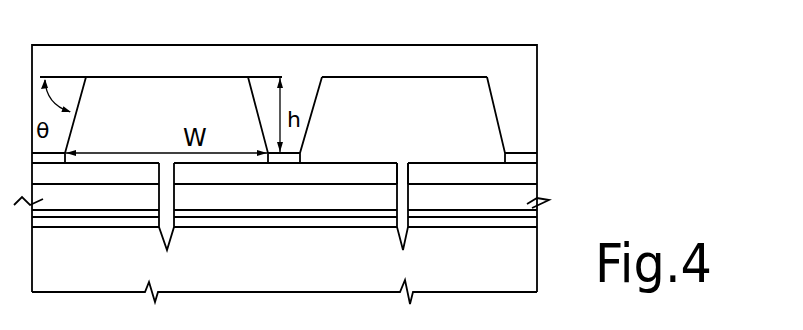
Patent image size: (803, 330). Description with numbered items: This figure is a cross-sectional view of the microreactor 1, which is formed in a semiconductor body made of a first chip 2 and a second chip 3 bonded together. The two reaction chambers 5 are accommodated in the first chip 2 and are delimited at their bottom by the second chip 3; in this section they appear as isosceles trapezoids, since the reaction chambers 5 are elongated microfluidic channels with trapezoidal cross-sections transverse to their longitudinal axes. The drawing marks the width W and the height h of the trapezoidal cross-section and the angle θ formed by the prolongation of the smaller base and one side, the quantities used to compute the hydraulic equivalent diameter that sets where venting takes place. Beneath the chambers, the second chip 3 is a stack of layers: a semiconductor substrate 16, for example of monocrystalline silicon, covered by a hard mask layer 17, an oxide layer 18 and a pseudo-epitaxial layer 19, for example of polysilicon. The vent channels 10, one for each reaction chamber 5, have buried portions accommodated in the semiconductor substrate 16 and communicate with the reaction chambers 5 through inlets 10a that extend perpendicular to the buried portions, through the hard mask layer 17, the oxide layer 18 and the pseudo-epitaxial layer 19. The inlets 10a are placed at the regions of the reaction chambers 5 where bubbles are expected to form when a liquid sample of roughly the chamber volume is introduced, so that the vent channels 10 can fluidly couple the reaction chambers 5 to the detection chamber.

The microreactor 1 is at (616, 121).
The first chip 2 is at (532, 92).
The second chip 3 is at (108, 300).
The reaction chamber 5 is at (164, 131).
The vent channel 10 is at (175, 247).
The inlet 10a is at (403, 170).
The semiconductor substrate 16 is at (72, 285).
The hard mask layer 17 is at (245, 224).
The oxide layer 18 is at (284, 213).
The pseudo-epitaxial layer 19 is at (532, 190).